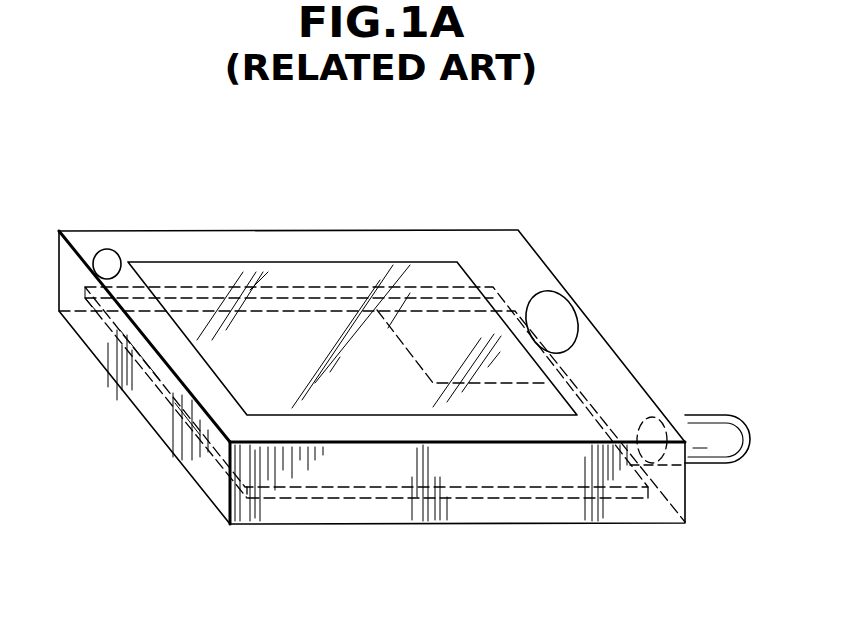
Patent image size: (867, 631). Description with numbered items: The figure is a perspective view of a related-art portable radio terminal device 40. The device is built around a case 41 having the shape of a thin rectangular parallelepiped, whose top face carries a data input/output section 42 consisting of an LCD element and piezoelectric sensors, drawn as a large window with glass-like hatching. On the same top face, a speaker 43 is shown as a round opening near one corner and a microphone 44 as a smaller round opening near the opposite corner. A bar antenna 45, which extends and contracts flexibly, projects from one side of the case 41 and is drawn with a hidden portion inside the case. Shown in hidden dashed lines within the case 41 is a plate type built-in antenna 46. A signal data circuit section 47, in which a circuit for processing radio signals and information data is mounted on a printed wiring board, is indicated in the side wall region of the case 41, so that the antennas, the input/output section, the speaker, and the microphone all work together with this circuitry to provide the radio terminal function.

The portable radio terminal device 40 is at (138, 410).
The case 41 is at (272, 248).
The data input/output section 42 is at (355, 292).
The speaker 43 is at (552, 312).
The microphone 44 is at (108, 262).
The bar antenna 45 is at (706, 437).
The plate type built-in antenna 46 is at (434, 328).
The signal data circuit section 47 is at (548, 470).